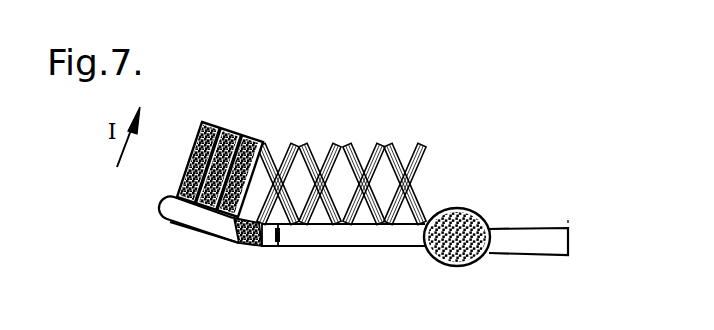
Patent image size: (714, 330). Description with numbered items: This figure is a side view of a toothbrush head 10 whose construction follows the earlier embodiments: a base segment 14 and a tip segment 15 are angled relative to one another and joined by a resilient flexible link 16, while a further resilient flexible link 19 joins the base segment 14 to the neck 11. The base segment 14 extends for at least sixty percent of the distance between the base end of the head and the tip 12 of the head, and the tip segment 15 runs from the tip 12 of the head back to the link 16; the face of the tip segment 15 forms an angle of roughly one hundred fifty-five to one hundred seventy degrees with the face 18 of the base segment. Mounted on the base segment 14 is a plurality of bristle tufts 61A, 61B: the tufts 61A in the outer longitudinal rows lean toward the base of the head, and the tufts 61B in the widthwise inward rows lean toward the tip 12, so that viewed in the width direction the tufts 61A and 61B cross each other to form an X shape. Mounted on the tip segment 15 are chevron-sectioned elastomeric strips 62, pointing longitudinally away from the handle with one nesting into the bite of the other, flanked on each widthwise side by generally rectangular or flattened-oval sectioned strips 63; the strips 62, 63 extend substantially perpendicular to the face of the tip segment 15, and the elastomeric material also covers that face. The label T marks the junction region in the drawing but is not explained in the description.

The toothbrush head 10 is at (198, 268).
The neck 11 is at (515, 242).
The tip of the head 12 is at (170, 197).
The base segment 14 is at (355, 237).
The tip segment 15 is at (198, 218).
The resilient flexible link 16 is at (242, 247).
The joint T is at (285, 247).
The face of the base segment 18 is at (381, 165).
The resilient flexible link 19 is at (459, 263).
The bristle tufts 61A is at (412, 150).
The bristle tufts 61B is at (397, 150).
The chevron sectioned elastomeric strips 62 is at (226, 146).
The rectangular or flattened oval sectioned strips 63 is at (200, 140).